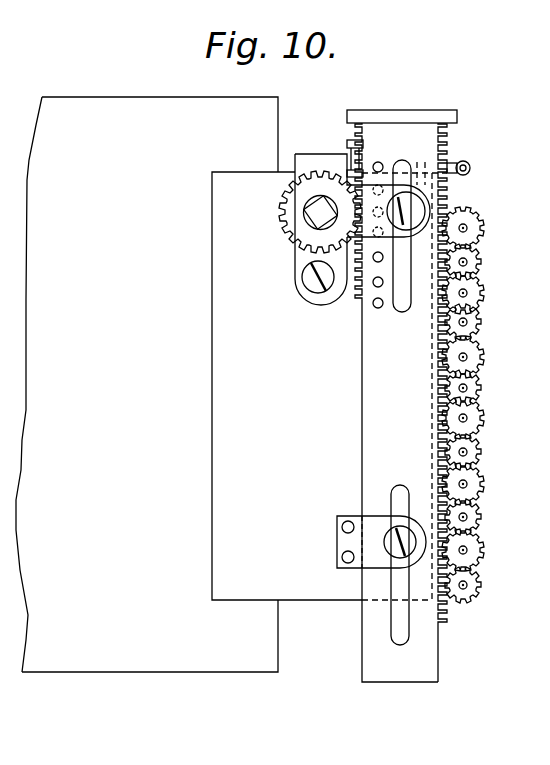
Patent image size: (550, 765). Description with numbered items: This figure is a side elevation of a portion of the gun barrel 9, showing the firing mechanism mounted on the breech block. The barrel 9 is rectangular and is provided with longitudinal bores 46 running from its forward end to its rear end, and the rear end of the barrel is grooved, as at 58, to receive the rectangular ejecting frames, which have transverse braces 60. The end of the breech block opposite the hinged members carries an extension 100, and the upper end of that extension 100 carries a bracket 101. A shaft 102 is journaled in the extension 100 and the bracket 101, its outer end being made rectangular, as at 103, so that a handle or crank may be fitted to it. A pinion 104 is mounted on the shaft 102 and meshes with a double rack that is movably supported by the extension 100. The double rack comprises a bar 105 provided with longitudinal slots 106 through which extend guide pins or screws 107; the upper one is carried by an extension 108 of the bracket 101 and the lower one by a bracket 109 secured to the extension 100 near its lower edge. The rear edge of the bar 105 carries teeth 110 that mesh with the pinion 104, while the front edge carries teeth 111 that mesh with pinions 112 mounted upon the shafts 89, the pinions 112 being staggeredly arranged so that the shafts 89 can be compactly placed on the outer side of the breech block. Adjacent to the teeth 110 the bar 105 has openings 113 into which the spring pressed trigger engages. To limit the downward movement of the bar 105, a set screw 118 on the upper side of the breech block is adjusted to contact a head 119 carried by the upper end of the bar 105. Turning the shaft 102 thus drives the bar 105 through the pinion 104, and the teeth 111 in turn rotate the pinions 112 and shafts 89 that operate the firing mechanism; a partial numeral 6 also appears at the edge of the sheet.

The gun barrel 9 is at (126, 97).
The extension 100 is at (295, 274).
The bracket 101 is at (295, 162).
The shaft 102 is at (307, 204).
The rectangular outer end 103 is at (310, 224).
The pinion 104 is at (287, 208).
The bar 105 is at (380, 350).
The longitudinal slots 106 is at (402, 488).
The guide pins or screws 107 is at (393, 533).
The extension of the bracket 108 is at (408, 185).
The bracket 109 is at (337, 522).
The teeth 110 is at (357, 310).
The teeth 111 is at (488, 631).
The pinions 112 is at (480, 301).
The openings 113 is at (372, 306).
The set screw 118 is at (347, 157).
The head 119 is at (410, 115).
The shafts 89 is at (468, 228).
The transverse braces 60 is at (536, 373).
The longitudinal bores 46 is at (549, 458).
The frame 6 is at (545, 513).
The groove 58 is at (536, 625).